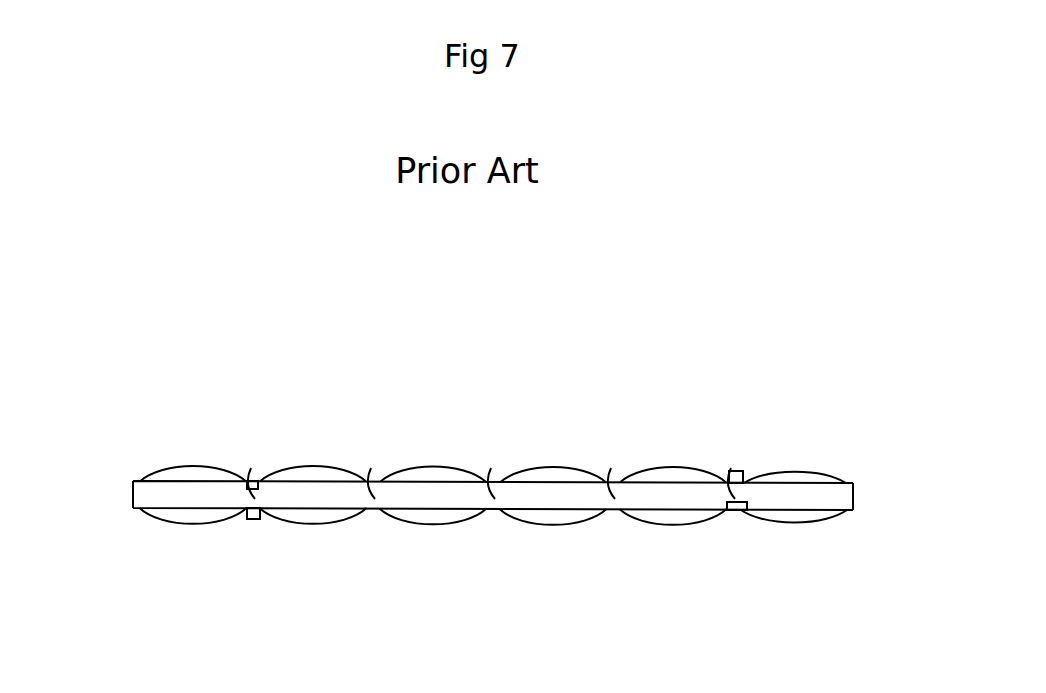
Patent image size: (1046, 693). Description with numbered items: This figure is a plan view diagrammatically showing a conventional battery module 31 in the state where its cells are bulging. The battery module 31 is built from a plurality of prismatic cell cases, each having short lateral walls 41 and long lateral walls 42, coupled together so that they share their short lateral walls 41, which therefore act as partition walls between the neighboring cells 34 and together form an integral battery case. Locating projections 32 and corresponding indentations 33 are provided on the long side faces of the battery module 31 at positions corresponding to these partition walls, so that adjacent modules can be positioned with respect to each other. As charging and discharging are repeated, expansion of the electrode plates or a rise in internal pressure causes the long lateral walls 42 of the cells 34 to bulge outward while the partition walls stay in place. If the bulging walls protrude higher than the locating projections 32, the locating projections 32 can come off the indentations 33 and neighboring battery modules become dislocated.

The battery module 31 is at (133, 497).
The locating projection 32 is at (740, 471).
The indentation 33 is at (252, 481).
The cell 34 is at (190, 524).
The short lateral wall 41 is at (133, 485).
The long lateral wall 42 is at (172, 478).